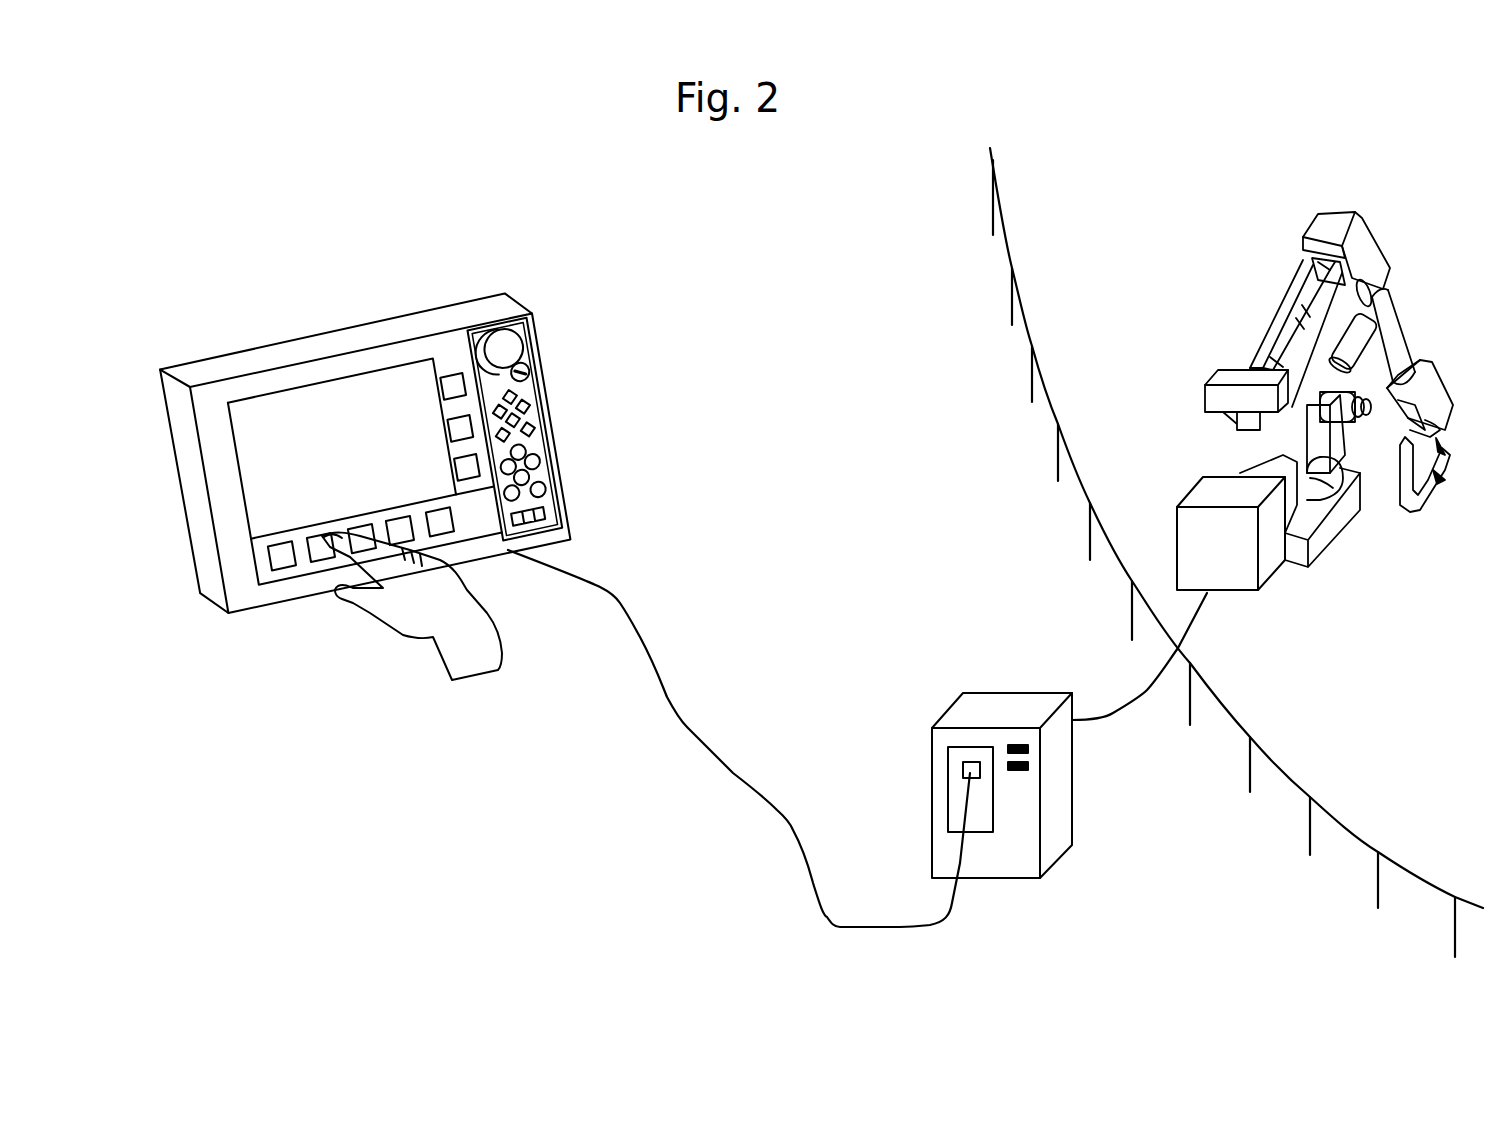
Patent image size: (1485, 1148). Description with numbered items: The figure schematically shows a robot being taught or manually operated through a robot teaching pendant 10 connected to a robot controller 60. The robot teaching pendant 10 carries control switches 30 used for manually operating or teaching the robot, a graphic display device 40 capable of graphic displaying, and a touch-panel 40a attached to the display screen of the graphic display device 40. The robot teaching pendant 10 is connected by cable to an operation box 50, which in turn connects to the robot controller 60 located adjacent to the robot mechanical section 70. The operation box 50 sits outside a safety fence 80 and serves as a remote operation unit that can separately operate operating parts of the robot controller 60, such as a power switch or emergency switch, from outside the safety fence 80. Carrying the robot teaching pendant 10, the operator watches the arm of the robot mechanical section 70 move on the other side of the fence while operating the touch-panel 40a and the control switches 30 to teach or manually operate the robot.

The robot teaching pendant 10 is at (372, 336).
The control switches 30 is at (535, 447).
The graphic display device 40 is at (300, 413).
The touch-panel 40a is at (268, 575).
The operation box 50 is at (1020, 863).
The robot controller 60 is at (1227, 573).
The robot mechanical section 70 is at (1327, 222).
The safety fence 80 is at (993, 163).